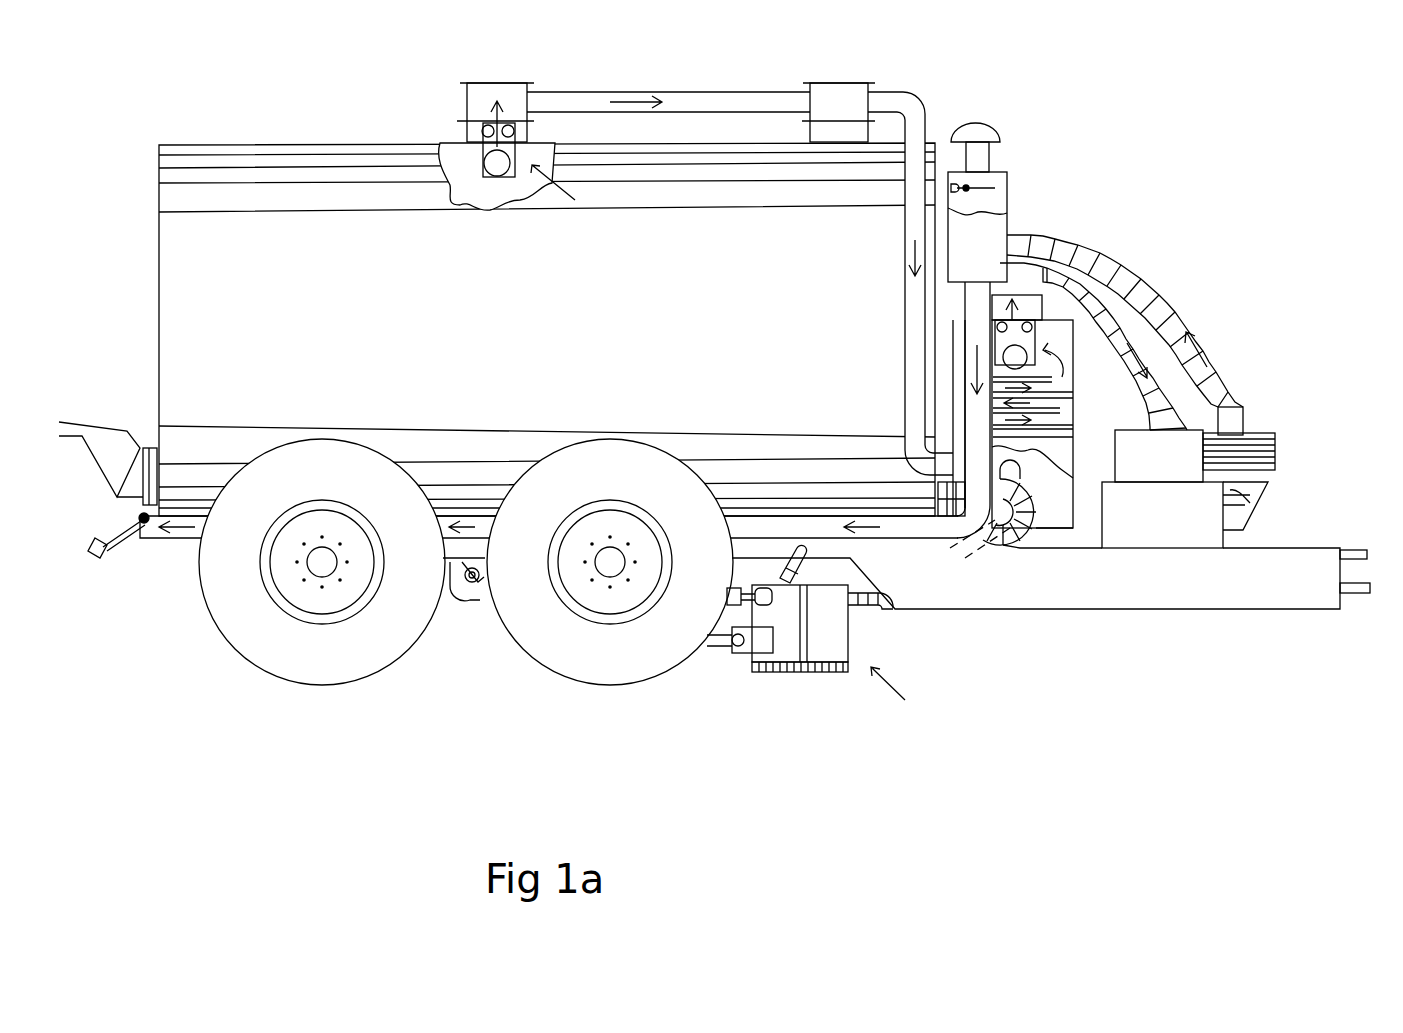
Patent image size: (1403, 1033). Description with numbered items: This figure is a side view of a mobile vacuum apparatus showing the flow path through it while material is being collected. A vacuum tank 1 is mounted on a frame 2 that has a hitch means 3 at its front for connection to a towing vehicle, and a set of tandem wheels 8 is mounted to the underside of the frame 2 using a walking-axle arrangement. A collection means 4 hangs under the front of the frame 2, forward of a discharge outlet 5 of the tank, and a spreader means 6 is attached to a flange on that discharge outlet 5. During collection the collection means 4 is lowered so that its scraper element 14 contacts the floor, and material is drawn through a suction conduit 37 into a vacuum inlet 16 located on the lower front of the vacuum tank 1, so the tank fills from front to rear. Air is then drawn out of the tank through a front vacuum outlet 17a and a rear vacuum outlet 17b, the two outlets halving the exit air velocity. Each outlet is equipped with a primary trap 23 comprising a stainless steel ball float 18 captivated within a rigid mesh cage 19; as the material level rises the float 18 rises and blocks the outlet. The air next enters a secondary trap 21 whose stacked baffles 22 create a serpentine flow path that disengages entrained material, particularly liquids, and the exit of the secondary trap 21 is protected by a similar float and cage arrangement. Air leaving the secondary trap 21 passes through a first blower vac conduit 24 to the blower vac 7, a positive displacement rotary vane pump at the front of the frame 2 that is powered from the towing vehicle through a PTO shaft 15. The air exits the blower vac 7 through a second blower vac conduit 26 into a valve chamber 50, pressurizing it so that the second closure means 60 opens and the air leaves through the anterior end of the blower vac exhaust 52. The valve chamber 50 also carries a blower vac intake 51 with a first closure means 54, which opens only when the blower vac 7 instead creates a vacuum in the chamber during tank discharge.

The vacuum tank 1 is at (180, 295).
The frame 2 is at (1185, 598).
The hitch means 3 is at (1357, 548).
The collection means 4 is at (817, 637).
The discharge outlet 5 is at (156, 445).
The spreader means 6 is at (112, 447).
The blower vac 7 is at (1255, 452).
The tandem wheels 8 is at (258, 640).
The scraper element 14 is at (783, 673).
The PTO shaft 15 is at (1237, 500).
The vacuum inlet 16 is at (940, 490).
The front vacuum outlet 17a is at (820, 93).
The rear vacuum outlet 17b is at (468, 92).
The ball float 18 is at (497, 168).
The rigid mesh cage 19 is at (482, 147).
The secondary trap 21 is at (1075, 470).
The stacked baffles 22 is at (1070, 427).
The primary trap 23 is at (569, 199).
The first blower vac conduit 24 is at (1122, 318).
The second blower vac conduit 26 is at (1180, 320).
The suction conduit 37 is at (896, 606).
The valve chamber 50 is at (1000, 237).
The blower vac intake 51 is at (985, 170).
The blower vac exhaust 52 is at (184, 540).
The first closure means 54 is at (977, 196).
The second closure means 60 is at (118, 537).